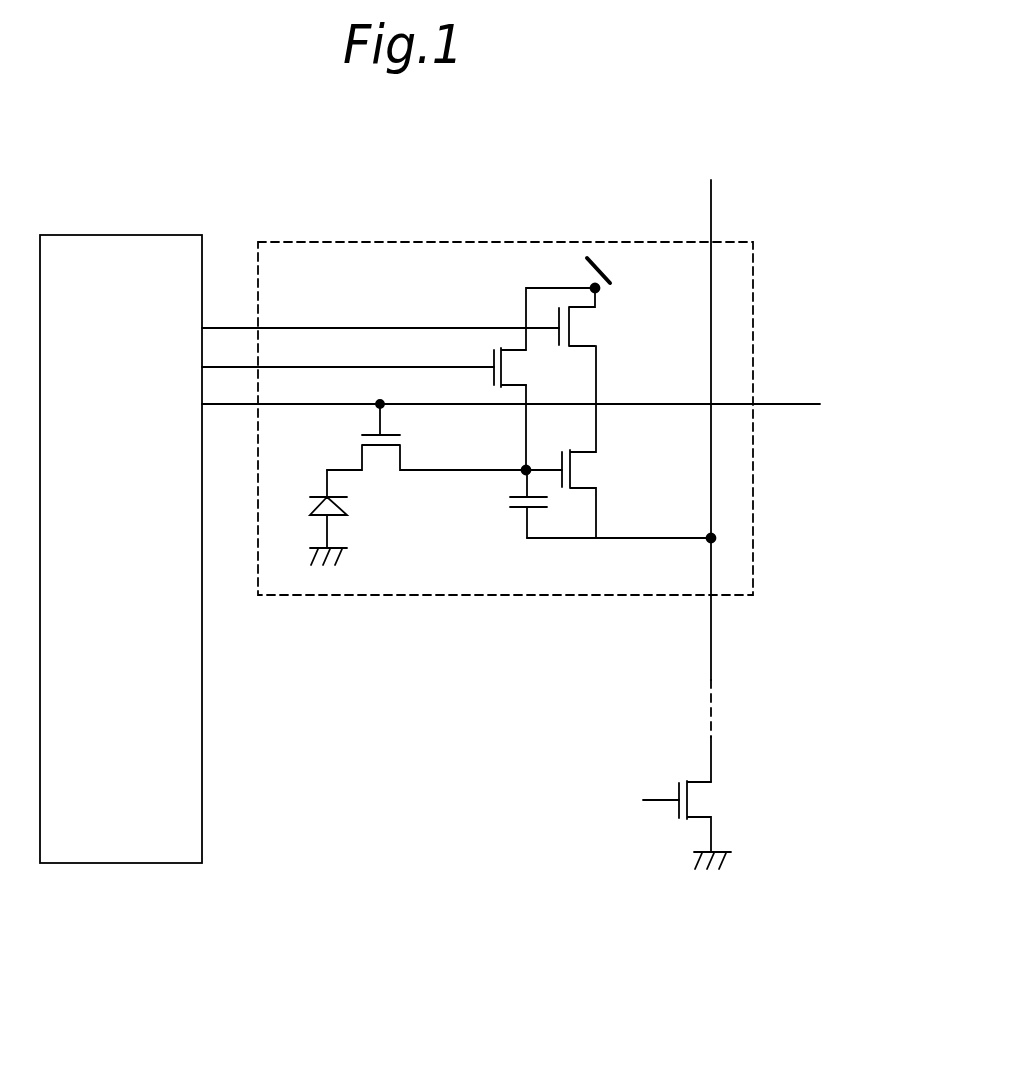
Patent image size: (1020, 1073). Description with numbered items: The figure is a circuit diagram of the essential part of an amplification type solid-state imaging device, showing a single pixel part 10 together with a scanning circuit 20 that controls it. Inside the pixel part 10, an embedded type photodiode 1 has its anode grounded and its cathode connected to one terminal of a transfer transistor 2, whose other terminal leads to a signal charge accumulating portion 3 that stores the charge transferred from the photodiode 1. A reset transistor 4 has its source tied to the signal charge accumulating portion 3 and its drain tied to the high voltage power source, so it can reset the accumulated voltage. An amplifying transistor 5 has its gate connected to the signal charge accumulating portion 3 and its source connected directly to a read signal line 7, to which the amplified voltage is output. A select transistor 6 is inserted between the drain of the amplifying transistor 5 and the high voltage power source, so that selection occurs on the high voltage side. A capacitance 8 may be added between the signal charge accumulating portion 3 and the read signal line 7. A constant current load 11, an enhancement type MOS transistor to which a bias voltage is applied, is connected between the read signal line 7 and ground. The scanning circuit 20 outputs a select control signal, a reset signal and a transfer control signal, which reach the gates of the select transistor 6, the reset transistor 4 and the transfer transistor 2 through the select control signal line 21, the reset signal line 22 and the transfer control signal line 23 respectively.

The photodiode 1 is at (307, 502).
The transfer transistor 2 is at (378, 455).
The signal charge accumulating portion 3 is at (525, 470).
The reset transistor 4 is at (515, 368).
The amplifying transistor 5 is at (585, 470).
The select transistor 6 is at (582, 326).
The read signal line 7 is at (712, 623).
The capacitance 8 is at (513, 512).
The pixel part 10 is at (493, 242).
The constant current load 11 is at (710, 797).
The scanning circuit 20 is at (125, 863).
The select control signal line 21 is at (407, 328).
The reset signal line 22 is at (378, 367).
The transfer control signal line 23 is at (783, 404).